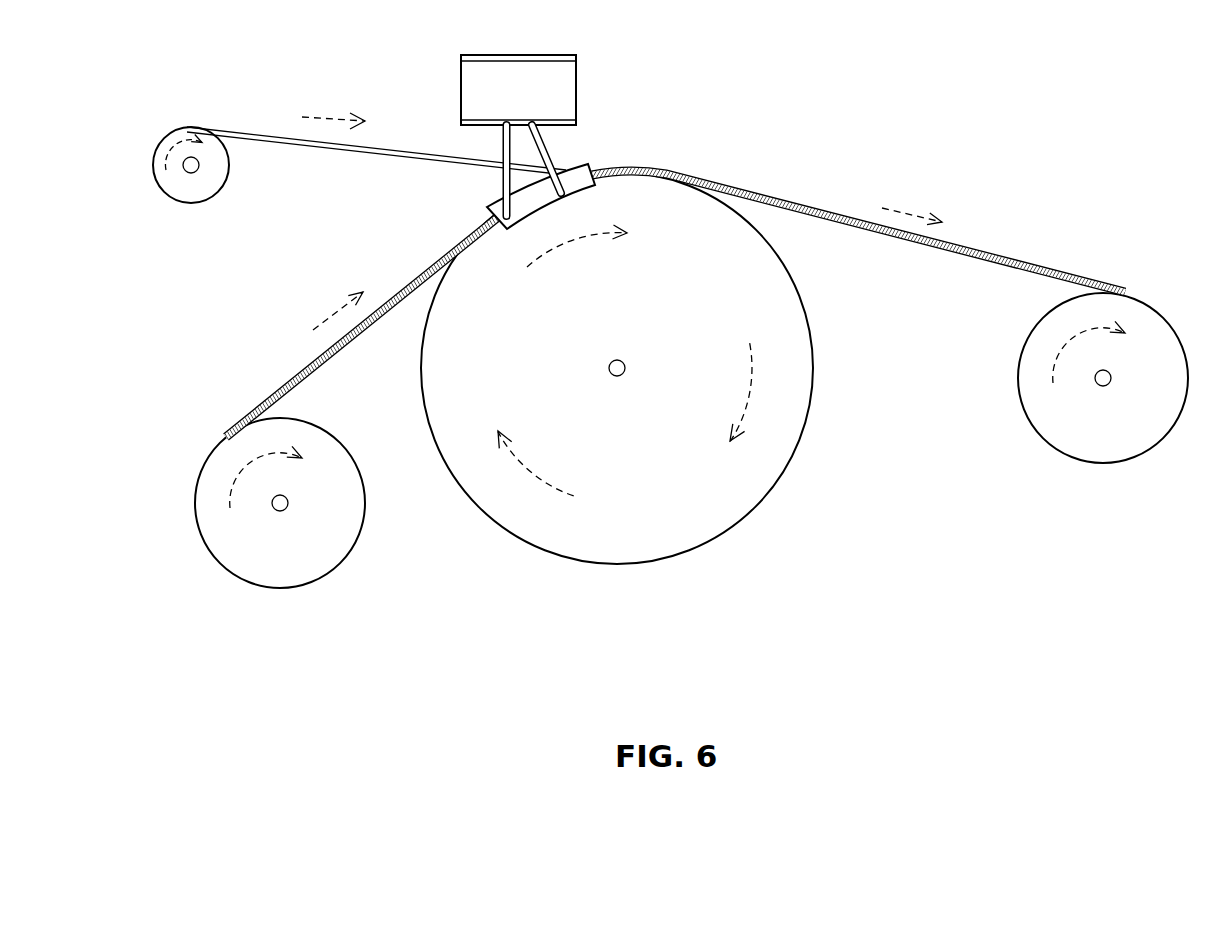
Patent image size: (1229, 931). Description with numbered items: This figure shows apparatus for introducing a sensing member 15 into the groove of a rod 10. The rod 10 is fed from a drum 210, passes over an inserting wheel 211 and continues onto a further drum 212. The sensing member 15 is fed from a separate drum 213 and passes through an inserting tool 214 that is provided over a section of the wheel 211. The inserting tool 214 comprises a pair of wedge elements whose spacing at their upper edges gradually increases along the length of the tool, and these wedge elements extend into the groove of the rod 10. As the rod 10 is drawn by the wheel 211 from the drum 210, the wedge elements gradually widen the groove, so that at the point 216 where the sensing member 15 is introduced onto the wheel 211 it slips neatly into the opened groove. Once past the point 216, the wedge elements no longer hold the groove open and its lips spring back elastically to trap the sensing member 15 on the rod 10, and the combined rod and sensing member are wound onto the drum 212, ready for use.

The rod 10 is at (307, 367).
The sensing member 15 is at (395, 155).
The drum 210 is at (285, 577).
The inserting wheel 211 is at (650, 538).
The further drum 212 is at (1070, 433).
The drum 213 is at (195, 195).
The inserting tool 214 is at (582, 178).
The point 216 is at (562, 165).